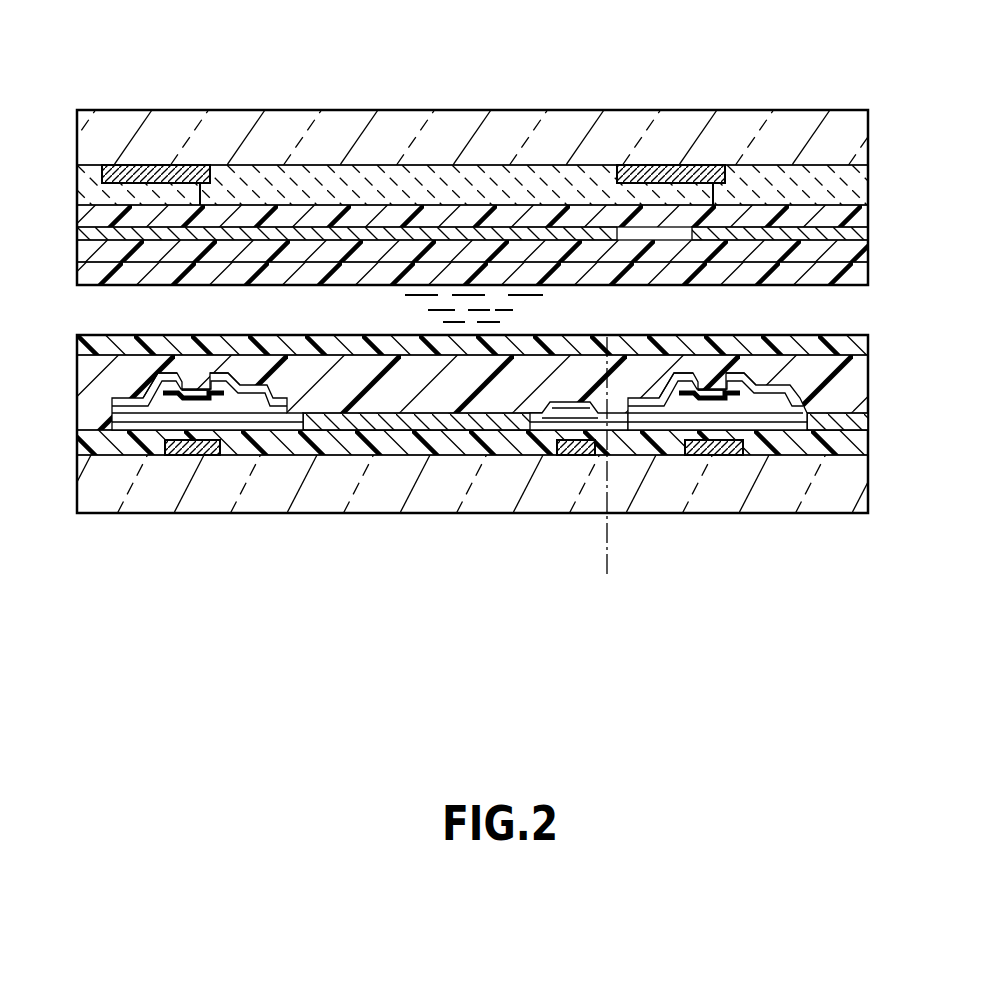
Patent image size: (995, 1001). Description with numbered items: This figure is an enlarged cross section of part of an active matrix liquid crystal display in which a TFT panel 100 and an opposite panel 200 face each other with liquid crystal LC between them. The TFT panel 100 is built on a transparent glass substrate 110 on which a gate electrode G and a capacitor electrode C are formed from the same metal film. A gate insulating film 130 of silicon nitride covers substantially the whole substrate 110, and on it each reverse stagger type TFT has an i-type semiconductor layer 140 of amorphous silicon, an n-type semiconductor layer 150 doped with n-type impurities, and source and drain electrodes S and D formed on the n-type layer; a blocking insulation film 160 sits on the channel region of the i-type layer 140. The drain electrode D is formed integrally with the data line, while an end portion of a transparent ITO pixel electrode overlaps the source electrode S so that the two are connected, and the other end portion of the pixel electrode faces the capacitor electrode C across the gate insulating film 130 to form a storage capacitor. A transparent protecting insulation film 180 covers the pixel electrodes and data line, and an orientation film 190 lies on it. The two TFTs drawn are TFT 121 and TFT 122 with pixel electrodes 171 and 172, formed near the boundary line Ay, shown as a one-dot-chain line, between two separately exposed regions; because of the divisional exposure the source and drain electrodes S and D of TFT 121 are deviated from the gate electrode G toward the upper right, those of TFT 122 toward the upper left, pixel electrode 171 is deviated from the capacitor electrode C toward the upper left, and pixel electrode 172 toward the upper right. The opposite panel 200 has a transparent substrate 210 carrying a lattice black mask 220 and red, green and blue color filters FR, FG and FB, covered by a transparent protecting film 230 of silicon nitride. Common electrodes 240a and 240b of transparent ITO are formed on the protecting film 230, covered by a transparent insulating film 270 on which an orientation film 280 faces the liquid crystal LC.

The TFT panel 100 is at (540, 521).
The transparent substrate 110 is at (87, 505).
The TFT 121 is at (206, 371).
The TFT 122 is at (722, 371).
The gate insulating film 130 is at (343, 450).
The i-type semiconductor layer 140 is at (243, 425).
The n-type semiconductor layer 150 is at (136, 418).
The blocking insulation film 160 is at (195, 388).
The pixel electrode 171 is at (393, 428).
The pixel electrode 172 is at (840, 428).
The transparent protecting insulation film 180 is at (447, 408).
The orientation film 190 is at (500, 360).
The opposite panel 200 is at (631, 102).
The transparent substrate 210 is at (78, 110).
The black mask 220 is at (192, 180).
The transparent protecting film 230 is at (246, 218).
The common electrode 240a is at (550, 237).
The common electrode 240b is at (762, 232).
The transparent insulating film 270 is at (362, 247).
The orientation film 280 is at (418, 263).
The drain electrode D is at (152, 378).
The source electrode S is at (247, 388).
The gate electrode G is at (205, 452).
The capacitor electrode C is at (573, 455).
The red color filter FR is at (147, 192).
The green color filter FG is at (318, 178).
The blue color filter FB is at (827, 178).
The liquid crystal LC is at (480, 300).
The boundary line Ay is at (607, 538).